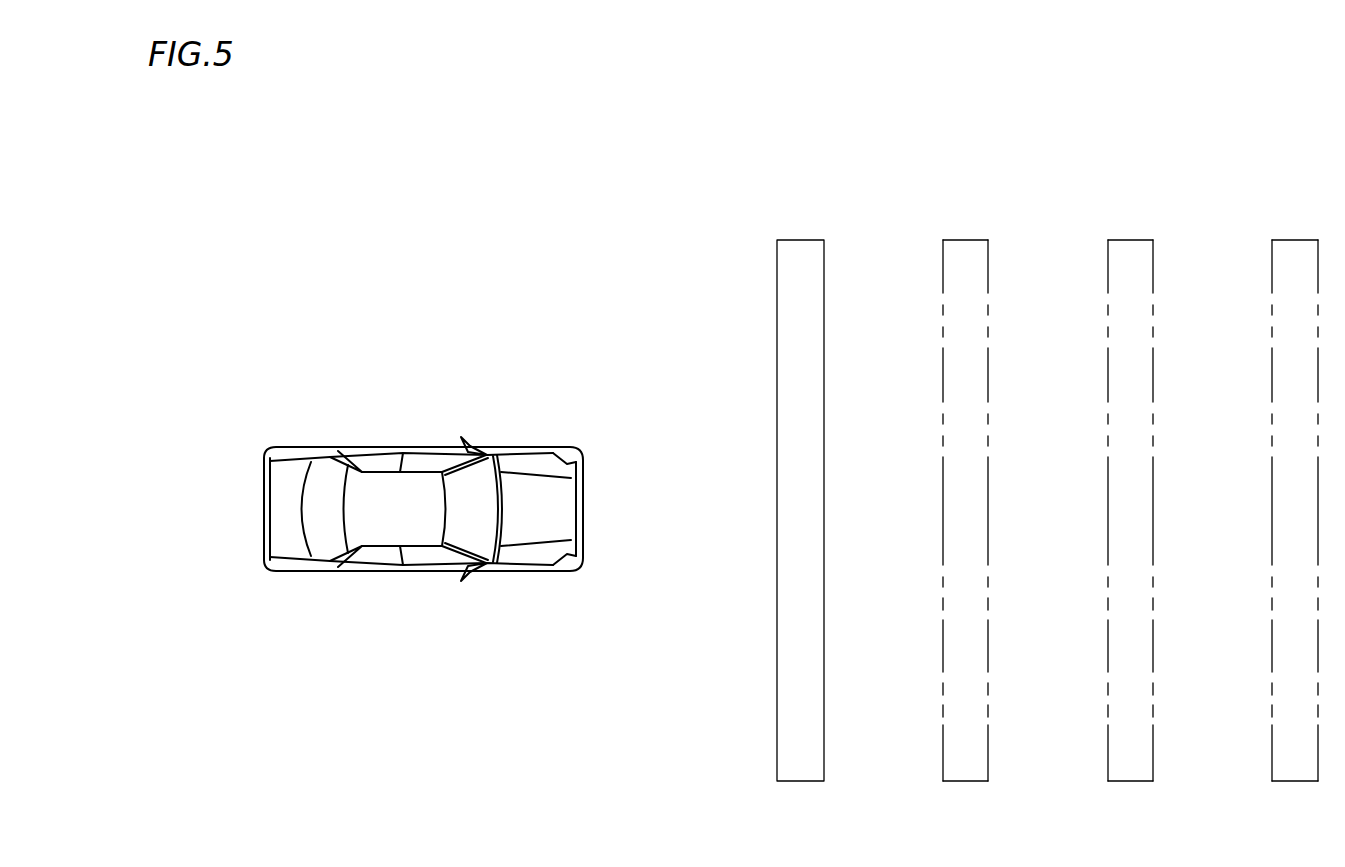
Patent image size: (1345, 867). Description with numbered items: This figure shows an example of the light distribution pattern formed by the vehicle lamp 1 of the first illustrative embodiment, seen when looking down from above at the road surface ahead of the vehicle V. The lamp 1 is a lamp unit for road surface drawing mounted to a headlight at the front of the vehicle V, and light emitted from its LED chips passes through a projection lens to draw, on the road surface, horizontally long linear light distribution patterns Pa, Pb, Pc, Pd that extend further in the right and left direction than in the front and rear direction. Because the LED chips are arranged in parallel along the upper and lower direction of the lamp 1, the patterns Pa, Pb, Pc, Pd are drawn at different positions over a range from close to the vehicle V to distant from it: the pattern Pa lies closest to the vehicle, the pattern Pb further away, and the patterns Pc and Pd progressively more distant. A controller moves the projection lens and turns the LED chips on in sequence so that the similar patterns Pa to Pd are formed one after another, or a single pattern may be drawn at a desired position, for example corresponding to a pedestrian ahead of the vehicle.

The vehicle lamp 1 is at (567, 568).
The vehicle roof V is at (393, 447).
The linear light distribution pattern Pa is at (802, 238).
The linear light distribution pattern Pb is at (968, 238).
The linear light distribution pattern Pc is at (1133, 238).
The linear light distribution pattern Pd is at (1297, 238).